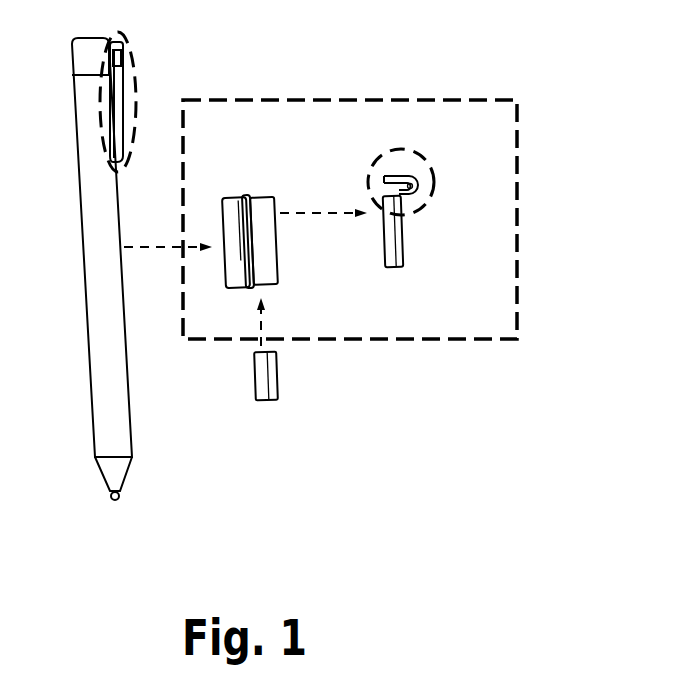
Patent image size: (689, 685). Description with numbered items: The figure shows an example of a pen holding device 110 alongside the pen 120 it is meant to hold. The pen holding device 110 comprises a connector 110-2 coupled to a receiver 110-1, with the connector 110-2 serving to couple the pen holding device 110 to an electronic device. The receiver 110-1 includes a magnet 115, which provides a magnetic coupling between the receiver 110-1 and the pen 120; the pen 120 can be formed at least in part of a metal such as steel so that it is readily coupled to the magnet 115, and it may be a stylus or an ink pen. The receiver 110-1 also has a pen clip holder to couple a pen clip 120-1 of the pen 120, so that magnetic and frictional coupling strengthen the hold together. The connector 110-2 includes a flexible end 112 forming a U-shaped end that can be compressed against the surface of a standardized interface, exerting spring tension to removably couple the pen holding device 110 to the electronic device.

The pen holding device 110 is at (519, 272).
The receiver 110-1 is at (277, 242).
The connector 110-2 is at (405, 237).
The flexible end 112 is at (422, 152).
The magnet 115 is at (287, 387).
The pen 120 is at (83, 290).
The pen clip 120-1 is at (138, 73).